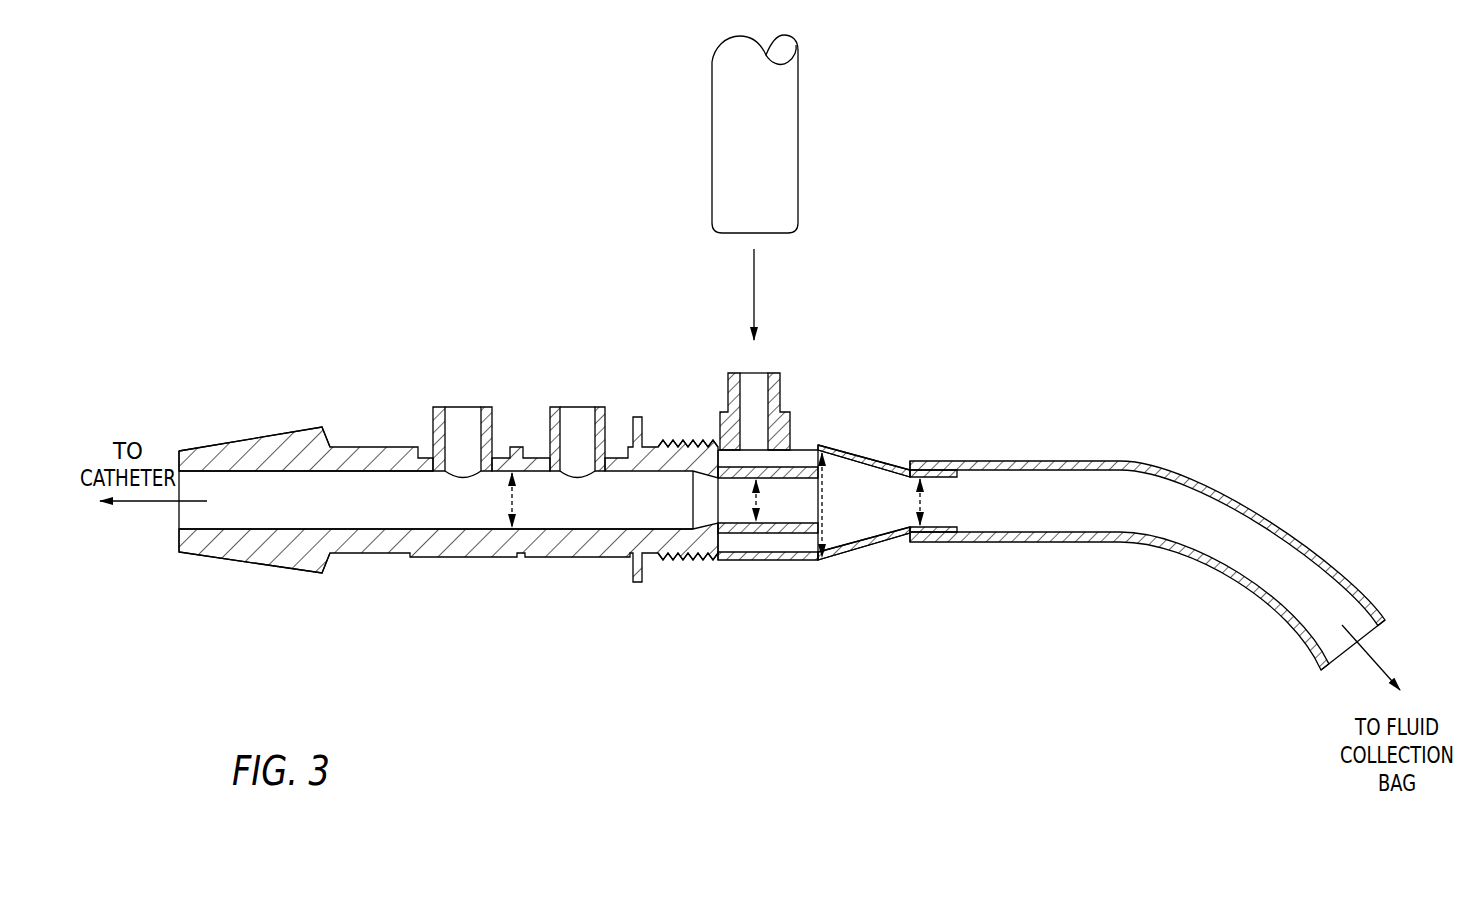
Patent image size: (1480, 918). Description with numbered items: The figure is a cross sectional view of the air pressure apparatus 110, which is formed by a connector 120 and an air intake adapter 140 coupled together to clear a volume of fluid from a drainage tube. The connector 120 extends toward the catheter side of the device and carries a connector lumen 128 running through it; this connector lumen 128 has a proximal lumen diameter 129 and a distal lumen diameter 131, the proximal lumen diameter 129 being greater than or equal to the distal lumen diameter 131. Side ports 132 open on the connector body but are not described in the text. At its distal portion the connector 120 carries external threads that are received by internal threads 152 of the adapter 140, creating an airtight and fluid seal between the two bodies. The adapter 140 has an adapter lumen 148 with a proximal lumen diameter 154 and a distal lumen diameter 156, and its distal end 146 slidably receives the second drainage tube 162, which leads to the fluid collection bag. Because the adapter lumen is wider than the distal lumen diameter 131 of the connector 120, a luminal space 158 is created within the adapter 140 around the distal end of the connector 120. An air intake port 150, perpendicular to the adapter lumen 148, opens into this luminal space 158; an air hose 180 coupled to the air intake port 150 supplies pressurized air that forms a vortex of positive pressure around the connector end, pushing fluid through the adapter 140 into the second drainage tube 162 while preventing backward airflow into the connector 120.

The air pressure apparatus 110 is at (672, 660).
The connector 120 is at (240, 420).
The connector lumen 128 is at (313, 497).
The proximal lumen diameter 129 is at (512, 497).
The distal lumen diameter 131 is at (755, 497).
The side ports 132 is at (463, 408).
The air intake adapter 140 is at (868, 380).
The distal end 146 is at (938, 512).
The adapter lumen 148 is at (857, 497).
The air intake port 150 is at (756, 372).
The internal threads 152 is at (703, 447).
The proximal lumen diameter 154 is at (824, 503).
The distal lumen diameter 156 is at (918, 500).
The luminal space 158 is at (788, 458).
The second drainage tube 162 is at (1118, 460).
The air hose 180 is at (797, 165).